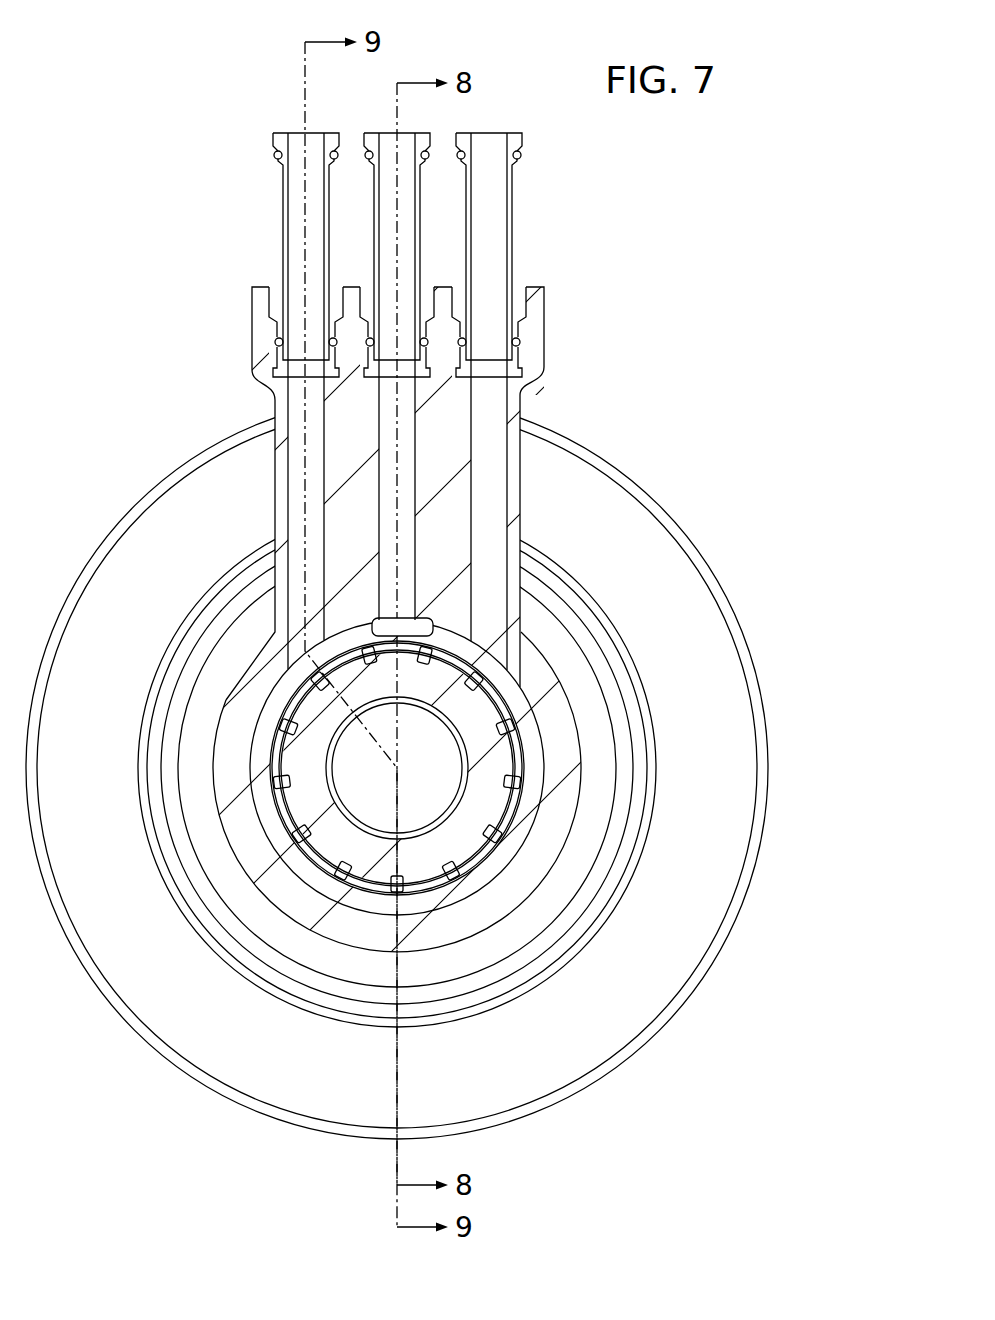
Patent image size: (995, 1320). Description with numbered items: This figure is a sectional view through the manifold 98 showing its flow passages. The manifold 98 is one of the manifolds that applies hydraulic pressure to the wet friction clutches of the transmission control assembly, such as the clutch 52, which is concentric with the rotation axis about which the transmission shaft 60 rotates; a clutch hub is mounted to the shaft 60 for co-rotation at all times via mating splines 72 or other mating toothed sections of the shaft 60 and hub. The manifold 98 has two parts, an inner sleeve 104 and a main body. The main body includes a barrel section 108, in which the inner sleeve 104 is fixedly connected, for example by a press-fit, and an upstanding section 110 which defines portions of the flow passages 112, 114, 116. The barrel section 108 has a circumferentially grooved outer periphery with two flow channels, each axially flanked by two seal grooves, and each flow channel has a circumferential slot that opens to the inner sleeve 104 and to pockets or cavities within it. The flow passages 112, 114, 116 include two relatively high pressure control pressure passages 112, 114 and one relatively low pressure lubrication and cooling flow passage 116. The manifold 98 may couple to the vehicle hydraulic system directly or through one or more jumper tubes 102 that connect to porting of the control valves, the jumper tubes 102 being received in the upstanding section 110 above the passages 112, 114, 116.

The friction clutch 52 is at (704, 553).
The transmission shaft 60 is at (458, 840).
The mating splines 72 is at (503, 698).
The manifold 98 is at (550, 323).
The jumper tubes 102 is at (373, 202).
The inner sleeve 104 is at (370, 902).
The barrel section 108 is at (555, 812).
The upstanding section 110 is at (512, 492).
The control pressure passage 112 is at (507, 397).
The control pressure passage 114 is at (378, 512).
The lubrication/cooling flow passage 116 is at (288, 397).